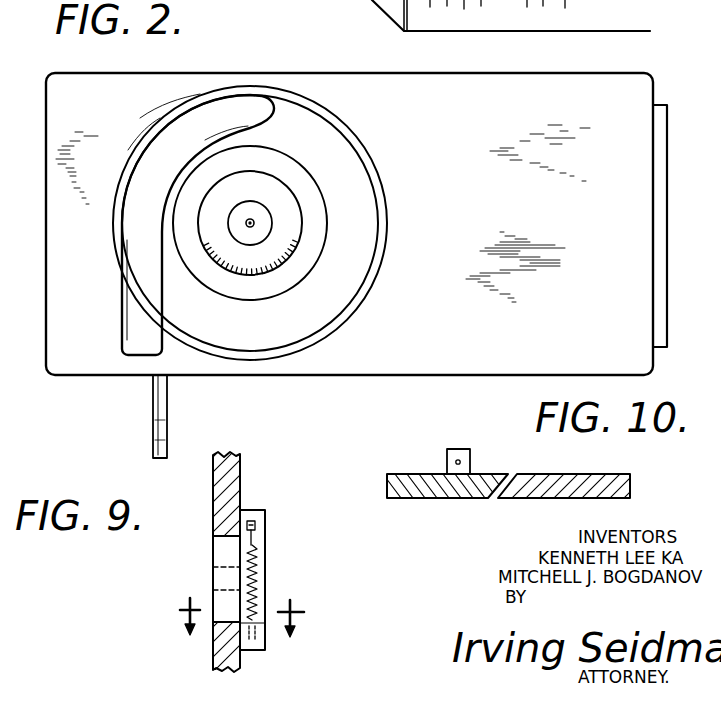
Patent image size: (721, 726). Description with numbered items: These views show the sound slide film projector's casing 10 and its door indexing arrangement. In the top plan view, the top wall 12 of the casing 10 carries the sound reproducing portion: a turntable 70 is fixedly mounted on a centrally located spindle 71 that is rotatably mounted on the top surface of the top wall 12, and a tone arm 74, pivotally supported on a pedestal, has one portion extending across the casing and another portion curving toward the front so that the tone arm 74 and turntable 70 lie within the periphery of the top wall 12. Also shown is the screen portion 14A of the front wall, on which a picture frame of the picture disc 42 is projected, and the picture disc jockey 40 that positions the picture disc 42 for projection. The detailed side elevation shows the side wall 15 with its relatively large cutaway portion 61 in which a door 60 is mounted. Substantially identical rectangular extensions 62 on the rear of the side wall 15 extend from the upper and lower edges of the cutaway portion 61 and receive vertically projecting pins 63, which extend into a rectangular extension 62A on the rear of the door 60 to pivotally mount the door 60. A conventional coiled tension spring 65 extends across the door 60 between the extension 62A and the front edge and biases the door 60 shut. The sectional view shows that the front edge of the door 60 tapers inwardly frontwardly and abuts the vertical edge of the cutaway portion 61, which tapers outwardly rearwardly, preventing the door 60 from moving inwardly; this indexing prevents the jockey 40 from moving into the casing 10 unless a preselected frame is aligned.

In FIG. 2, the top wall 12 is at (508, 89).
In FIG. 2, the screen portion 14A is at (552, 0).
In FIG. 2, the turntable 70 is at (362, 219).
In FIG. 2, the spindle 71 is at (254, 223).
In FIG. 2, the tone arm 74 is at (256, 100).
In FIG. 2, the picture disc jockey 40 is at (150, 394).
In FIG. 2, the picture disc 42 is at (160, 432).
In FIG. 9, the side wall 15 is at (222, 473).
In FIG. 10, the side wall 15 is at (632, 483).
In FIG. 9, the door 60 is at (213, 560).
In FIG. 10, the door 60 is at (490, 476).
In FIG. 9, the cutaway portion 61 is at (213, 537).
In FIG. 9, the rectangular extensions 62 is at (265, 516).
In FIG. 10, the rectangular extensions 62 is at (447, 468).
In FIG. 9, the rectangular extension 62A is at (265, 580).
In FIG. 9, the pins 63 is at (265, 541).
In FIG. 10, the pins 63 is at (455, 460).
In FIG. 9, the coiled tension spring 65 is at (265, 565).
In FIG. 9, the casing 10 is at (241, 619).